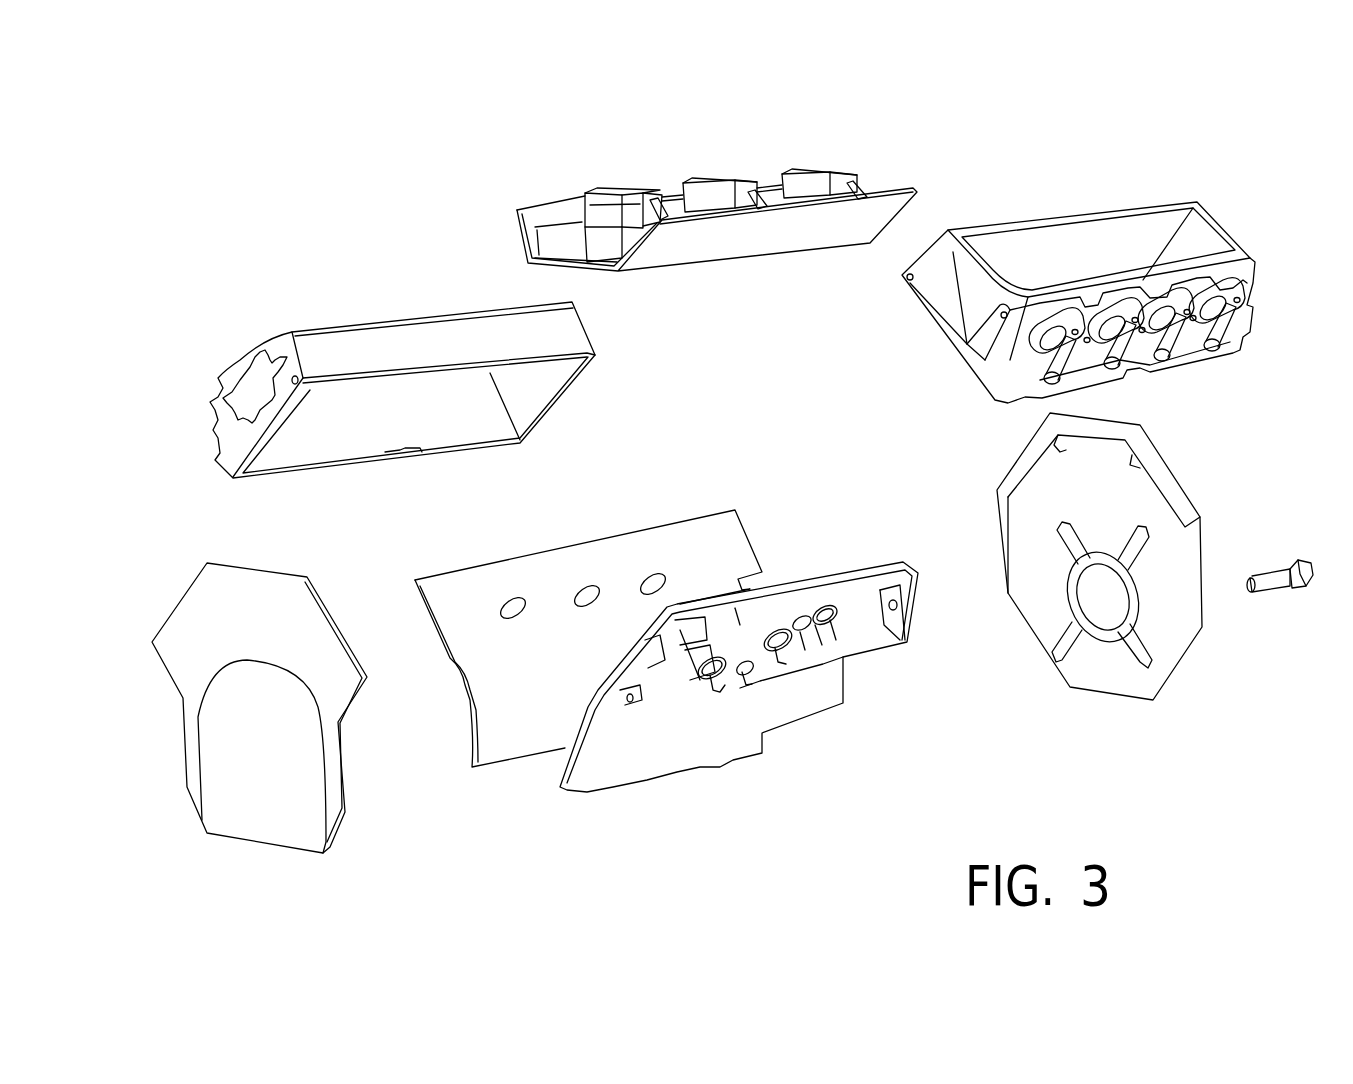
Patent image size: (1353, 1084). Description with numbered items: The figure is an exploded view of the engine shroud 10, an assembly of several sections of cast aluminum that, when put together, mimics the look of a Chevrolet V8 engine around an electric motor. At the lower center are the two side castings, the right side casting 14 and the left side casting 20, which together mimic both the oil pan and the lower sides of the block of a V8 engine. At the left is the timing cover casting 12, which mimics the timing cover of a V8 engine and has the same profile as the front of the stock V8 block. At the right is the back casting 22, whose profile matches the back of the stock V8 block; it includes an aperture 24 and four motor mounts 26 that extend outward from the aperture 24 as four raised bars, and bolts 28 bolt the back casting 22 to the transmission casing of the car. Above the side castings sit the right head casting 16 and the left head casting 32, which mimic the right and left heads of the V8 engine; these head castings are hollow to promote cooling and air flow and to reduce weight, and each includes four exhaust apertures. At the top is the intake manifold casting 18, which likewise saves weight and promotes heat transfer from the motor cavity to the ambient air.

The engine shroud 10 is at (1031, 148).
The timing cover casting 12 is at (220, 747).
The right side casting 14 is at (870, 638).
The right side head casting 16 is at (1207, 240).
The intake manifold casting 18 is at (613, 208).
The left side casting 20 is at (446, 590).
The back casting 22 is at (1187, 547).
The aperture 24 is at (1116, 608).
The motor mounts 26 is at (1062, 528).
The bolts 28 is at (1277, 584).
The left head casting 32 is at (375, 345).